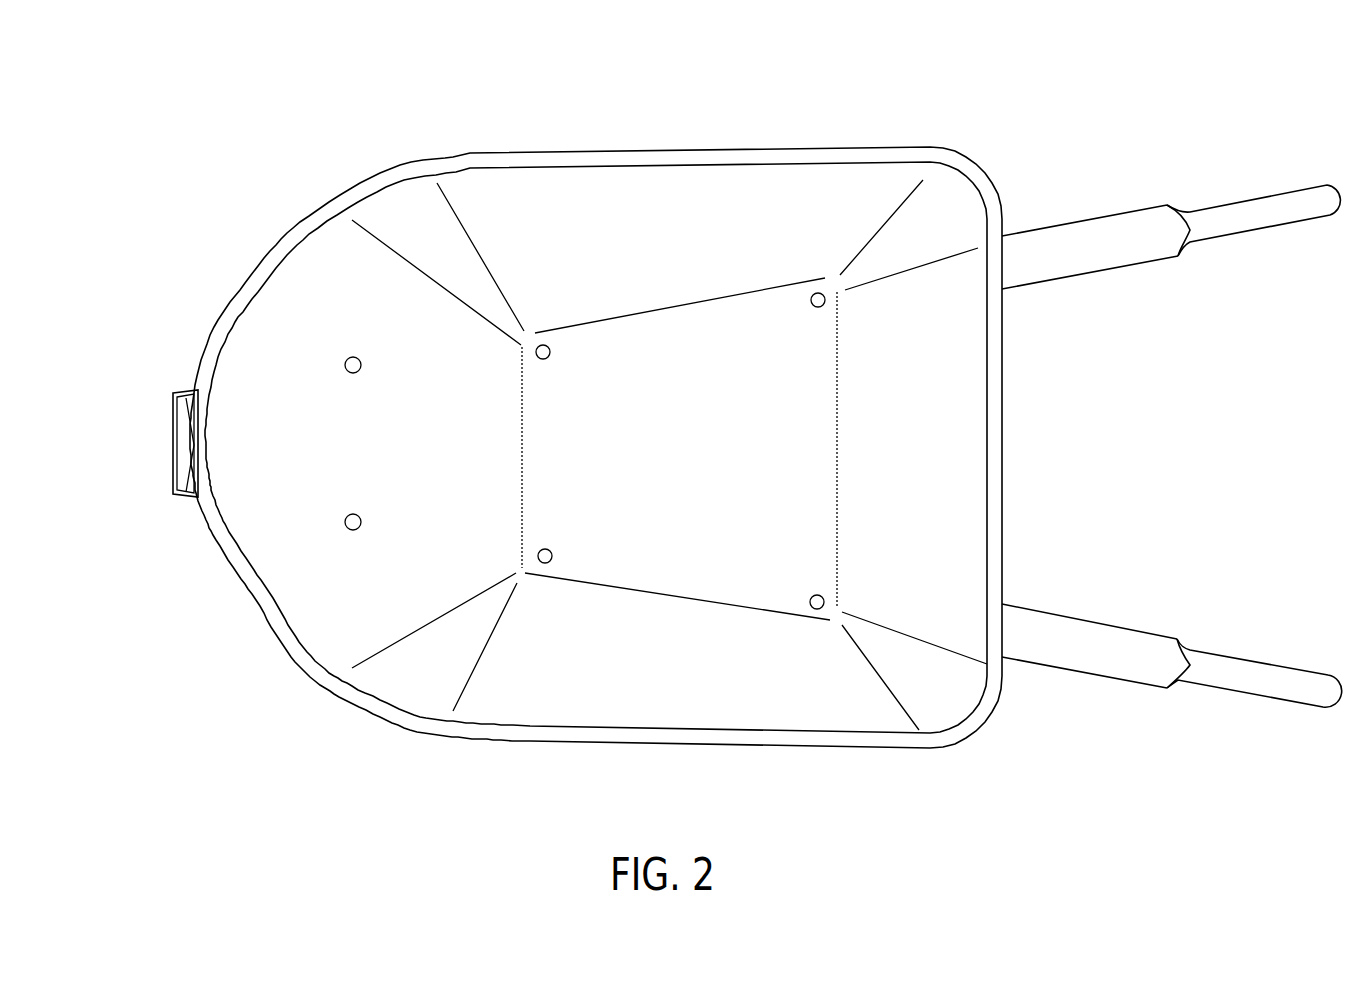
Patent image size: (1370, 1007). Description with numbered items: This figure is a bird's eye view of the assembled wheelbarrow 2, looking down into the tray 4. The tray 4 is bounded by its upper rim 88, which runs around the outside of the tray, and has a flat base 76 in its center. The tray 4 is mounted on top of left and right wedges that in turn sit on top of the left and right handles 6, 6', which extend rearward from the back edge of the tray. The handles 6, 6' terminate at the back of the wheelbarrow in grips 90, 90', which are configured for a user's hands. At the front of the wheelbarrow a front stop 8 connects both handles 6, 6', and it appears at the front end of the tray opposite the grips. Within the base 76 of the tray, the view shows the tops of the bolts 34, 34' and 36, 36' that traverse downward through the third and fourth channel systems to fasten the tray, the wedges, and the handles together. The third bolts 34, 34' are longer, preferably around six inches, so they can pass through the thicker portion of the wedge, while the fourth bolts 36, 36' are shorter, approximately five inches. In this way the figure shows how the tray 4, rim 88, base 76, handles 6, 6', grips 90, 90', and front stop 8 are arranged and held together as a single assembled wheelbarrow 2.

The wheelbarrow 2 is at (985, 100).
The tray 4 is at (662, 215).
The left handle 6 is at (1096, 622).
The right handle 6' is at (1096, 277).
The front stop 8 is at (172, 428).
The third bolt 34 is at (582, 544).
The third bolt 34' is at (584, 369).
The fourth bolt 36 is at (783, 583).
The fourth bolt 36' is at (781, 316).
The base 76 is at (705, 469).
The upper rim 88 is at (402, 167).
The grip 90 is at (1254, 655).
The grip 90' is at (1253, 244).